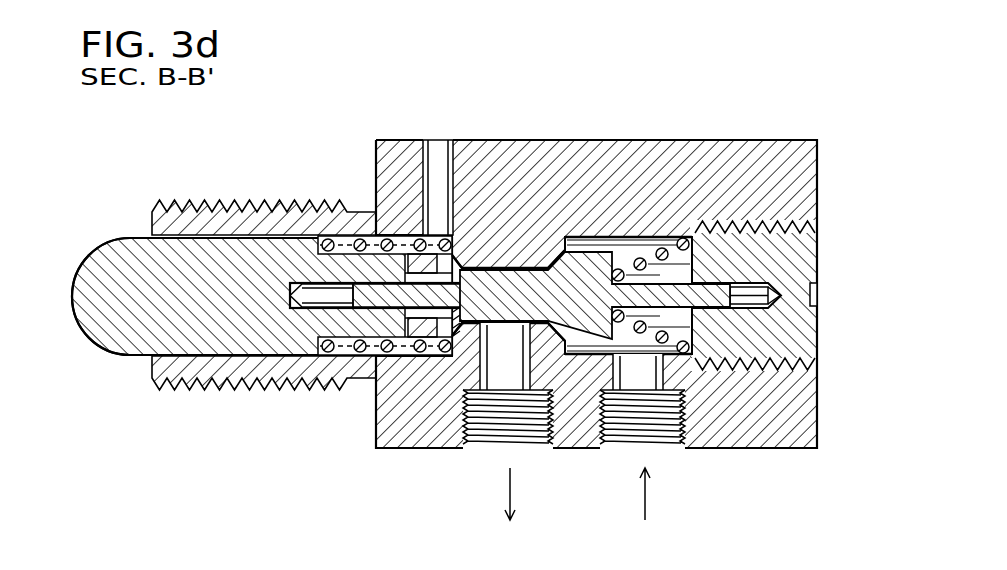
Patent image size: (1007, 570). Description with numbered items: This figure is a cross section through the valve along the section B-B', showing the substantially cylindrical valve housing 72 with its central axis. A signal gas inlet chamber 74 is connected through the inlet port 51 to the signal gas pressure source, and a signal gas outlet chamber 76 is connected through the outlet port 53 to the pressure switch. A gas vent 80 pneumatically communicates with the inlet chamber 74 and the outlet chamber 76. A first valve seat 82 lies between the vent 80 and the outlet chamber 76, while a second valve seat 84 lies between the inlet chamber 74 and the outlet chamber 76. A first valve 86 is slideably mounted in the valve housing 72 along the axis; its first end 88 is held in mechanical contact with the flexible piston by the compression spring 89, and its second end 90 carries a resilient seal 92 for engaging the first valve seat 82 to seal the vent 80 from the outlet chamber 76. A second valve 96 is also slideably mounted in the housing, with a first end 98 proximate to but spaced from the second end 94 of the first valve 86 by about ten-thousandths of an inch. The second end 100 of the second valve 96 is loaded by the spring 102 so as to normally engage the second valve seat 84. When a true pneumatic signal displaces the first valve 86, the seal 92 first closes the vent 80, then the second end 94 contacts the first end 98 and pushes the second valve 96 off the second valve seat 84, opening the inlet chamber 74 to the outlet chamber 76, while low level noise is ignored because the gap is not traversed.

The valve housing 72 is at (786, 144).
The gas vent 80 is at (442, 177).
The first valve seat 82 is at (460, 250).
The second valve seat 84 is at (568, 268).
The first valve 86 is at (197, 317).
The first end 88 is at (115, 328).
The compression spring 89 is at (363, 235).
The second end 90 is at (347, 323).
The resilient seal 92 is at (410, 330).
The second end 94 is at (440, 318).
The second valve 96 is at (507, 282).
The first end 98 is at (458, 320).
The second end 100 is at (590, 240).
The spring 102 is at (667, 251).
The outlet port 53 is at (492, 438).
The signal gas outlet chamber 76 is at (515, 367).
The signal gas inlet chamber 74 is at (645, 372).
The inlet port 51 is at (665, 425).